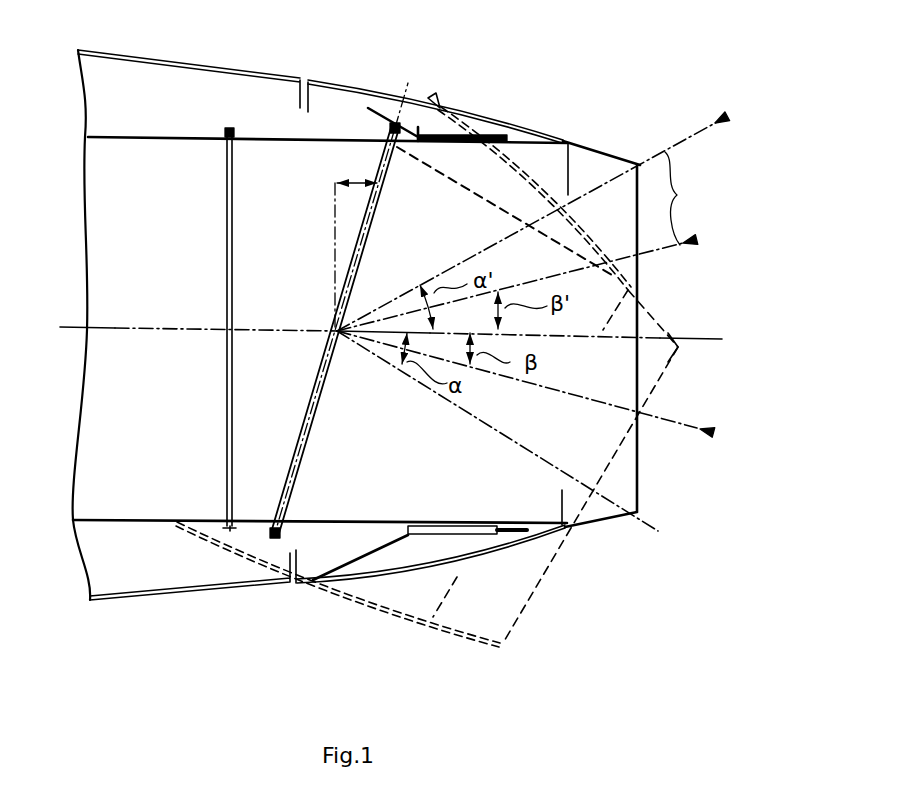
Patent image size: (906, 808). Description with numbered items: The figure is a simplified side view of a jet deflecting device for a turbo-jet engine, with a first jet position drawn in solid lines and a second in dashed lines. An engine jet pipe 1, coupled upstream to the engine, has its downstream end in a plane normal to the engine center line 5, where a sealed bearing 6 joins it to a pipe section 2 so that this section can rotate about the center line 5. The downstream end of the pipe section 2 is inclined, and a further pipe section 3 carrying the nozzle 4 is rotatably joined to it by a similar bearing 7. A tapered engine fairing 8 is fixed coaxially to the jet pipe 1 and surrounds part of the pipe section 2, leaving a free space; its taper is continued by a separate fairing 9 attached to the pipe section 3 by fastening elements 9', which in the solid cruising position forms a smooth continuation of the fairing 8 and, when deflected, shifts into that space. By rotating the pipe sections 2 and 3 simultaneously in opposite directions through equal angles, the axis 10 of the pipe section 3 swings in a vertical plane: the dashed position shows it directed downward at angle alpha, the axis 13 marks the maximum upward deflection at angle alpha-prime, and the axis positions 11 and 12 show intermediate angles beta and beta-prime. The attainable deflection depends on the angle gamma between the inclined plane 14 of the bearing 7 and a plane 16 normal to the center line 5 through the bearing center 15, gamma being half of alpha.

The engine jet pipe 1 is at (157, 135).
The pipe section 2 is at (273, 147).
The pipe section 3 is at (564, 143).
The nozzle 4 is at (603, 172).
The engine center line 5 is at (62, 328).
The bearing 6 is at (235, 128).
The bearing 7 is at (389, 128).
The engine fairing 8 is at (143, 53).
The fairing 9 is at (403, 363).
The fastening elements 9' is at (455, 93).
The axis of the pipe section 3 10 is at (638, 550).
The axis position 11 is at (716, 426).
The axis position 12 is at (698, 240).
The axis 13 is at (727, 116).
The inclined plane of the bearing 7 14 is at (407, 85).
The center of the bearing 7 15 is at (333, 338).
The plane normal to the center line 16 is at (335, 210).